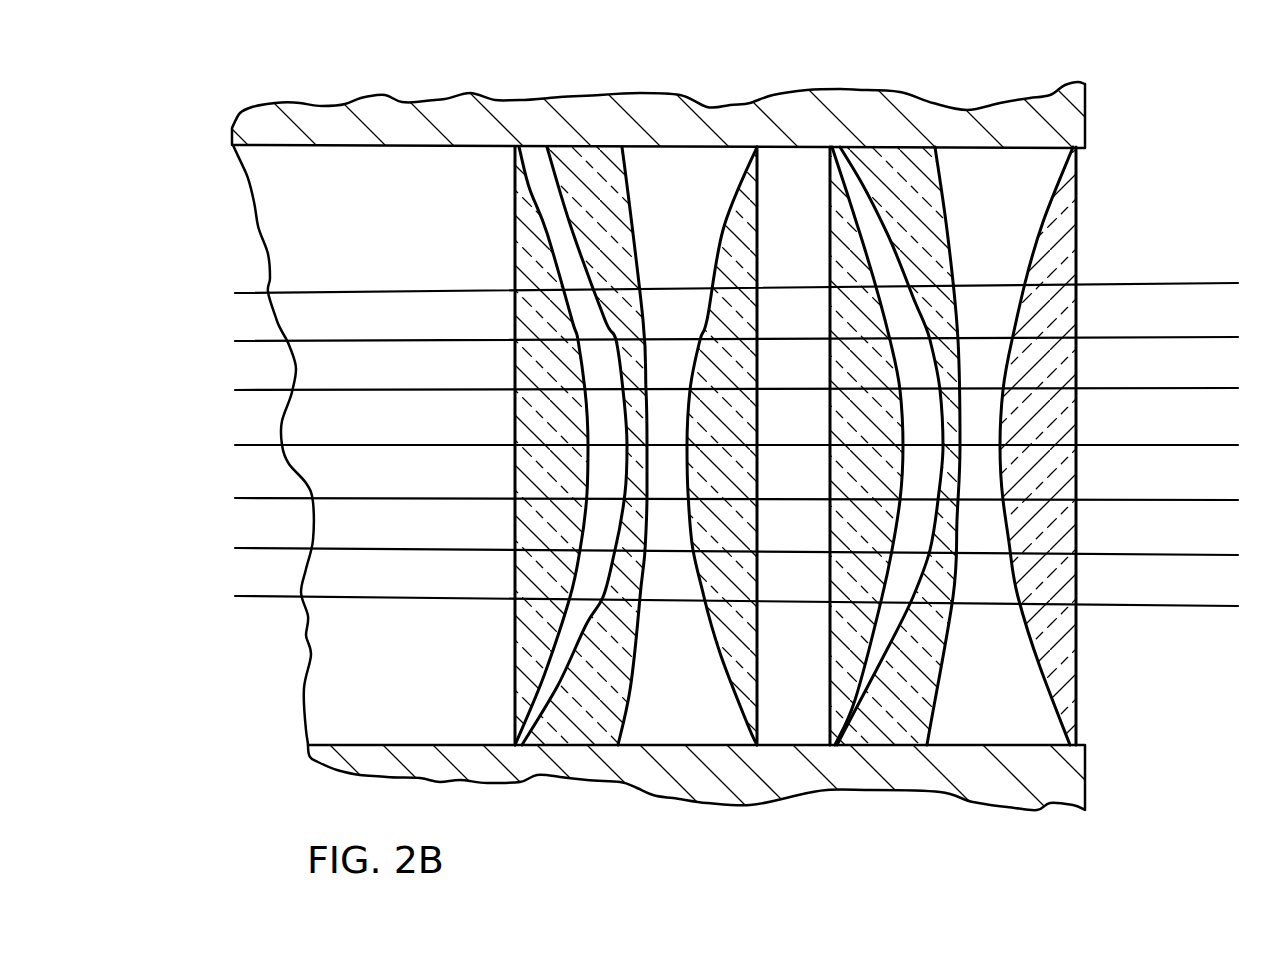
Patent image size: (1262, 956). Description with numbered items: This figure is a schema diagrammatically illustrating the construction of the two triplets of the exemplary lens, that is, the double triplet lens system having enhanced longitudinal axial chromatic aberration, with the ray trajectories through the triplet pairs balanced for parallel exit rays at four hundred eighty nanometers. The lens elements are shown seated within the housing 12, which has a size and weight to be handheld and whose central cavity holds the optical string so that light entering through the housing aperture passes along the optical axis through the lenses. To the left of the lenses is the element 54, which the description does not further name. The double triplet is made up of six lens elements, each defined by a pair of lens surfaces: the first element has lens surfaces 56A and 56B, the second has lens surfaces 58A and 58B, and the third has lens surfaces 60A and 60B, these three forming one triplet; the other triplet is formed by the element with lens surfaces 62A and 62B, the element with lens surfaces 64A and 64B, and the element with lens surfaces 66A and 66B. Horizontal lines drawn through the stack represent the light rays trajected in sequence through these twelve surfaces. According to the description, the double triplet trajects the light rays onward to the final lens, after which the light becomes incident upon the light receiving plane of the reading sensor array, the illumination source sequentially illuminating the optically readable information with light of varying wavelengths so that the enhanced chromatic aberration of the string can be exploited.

The housing 12 is at (468, 112).
The optical element 54 is at (315, 198).
The lens surface 56A is at (1077, 222).
The lens surface 56B is at (1043, 223).
The lens surface 58A is at (952, 232).
The lens surface 58B is at (880, 663).
The lens surface 60A is at (880, 240).
The lens surface 60B is at (830, 233).
The lens surface 62A is at (763, 253).
The lens surface 62B is at (723, 230).
The lens surface 64A is at (628, 697).
The lens surface 64B is at (572, 233).
The lens surface 66A is at (557, 690).
The lens surface 66B is at (515, 195).